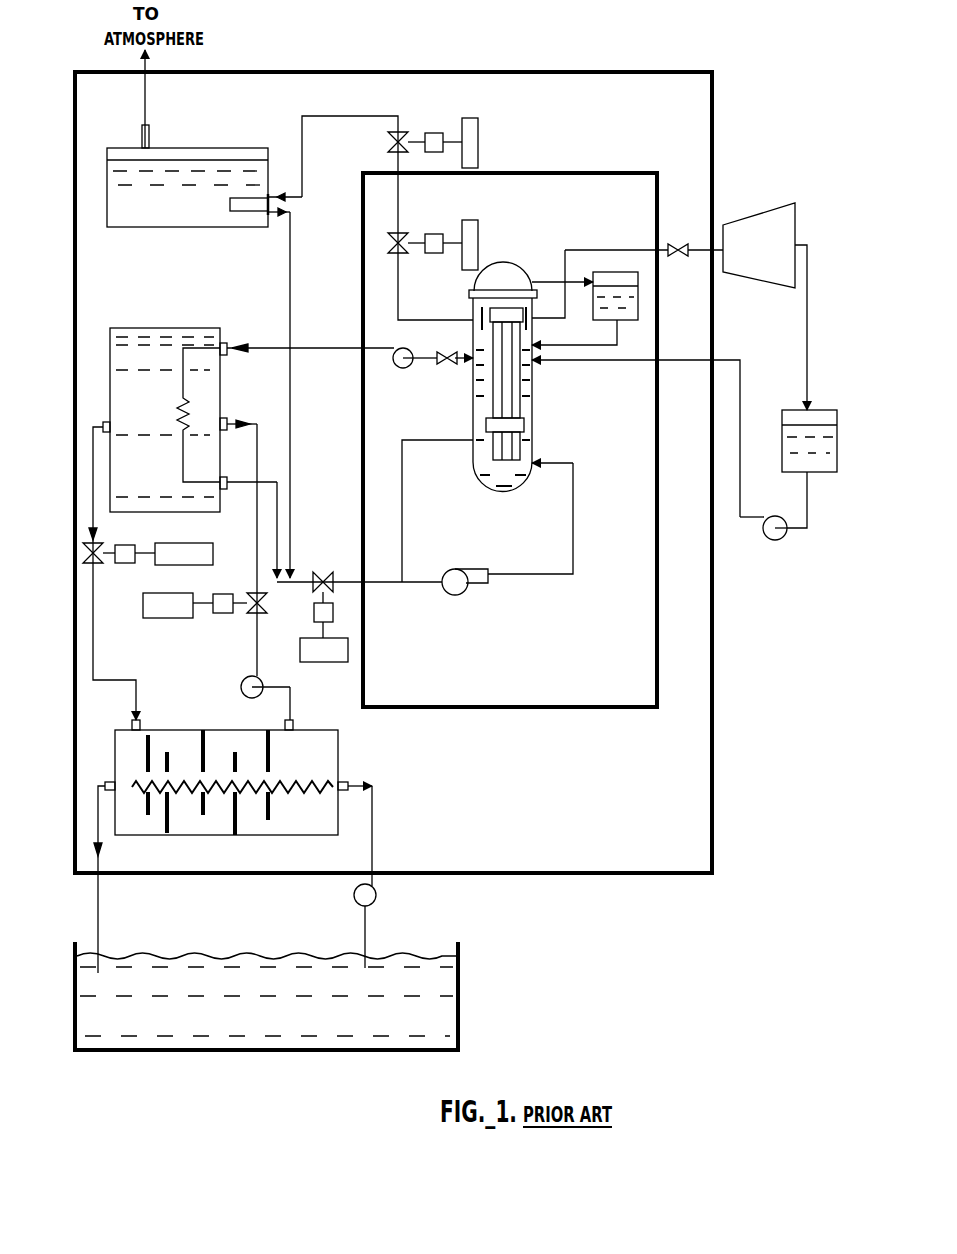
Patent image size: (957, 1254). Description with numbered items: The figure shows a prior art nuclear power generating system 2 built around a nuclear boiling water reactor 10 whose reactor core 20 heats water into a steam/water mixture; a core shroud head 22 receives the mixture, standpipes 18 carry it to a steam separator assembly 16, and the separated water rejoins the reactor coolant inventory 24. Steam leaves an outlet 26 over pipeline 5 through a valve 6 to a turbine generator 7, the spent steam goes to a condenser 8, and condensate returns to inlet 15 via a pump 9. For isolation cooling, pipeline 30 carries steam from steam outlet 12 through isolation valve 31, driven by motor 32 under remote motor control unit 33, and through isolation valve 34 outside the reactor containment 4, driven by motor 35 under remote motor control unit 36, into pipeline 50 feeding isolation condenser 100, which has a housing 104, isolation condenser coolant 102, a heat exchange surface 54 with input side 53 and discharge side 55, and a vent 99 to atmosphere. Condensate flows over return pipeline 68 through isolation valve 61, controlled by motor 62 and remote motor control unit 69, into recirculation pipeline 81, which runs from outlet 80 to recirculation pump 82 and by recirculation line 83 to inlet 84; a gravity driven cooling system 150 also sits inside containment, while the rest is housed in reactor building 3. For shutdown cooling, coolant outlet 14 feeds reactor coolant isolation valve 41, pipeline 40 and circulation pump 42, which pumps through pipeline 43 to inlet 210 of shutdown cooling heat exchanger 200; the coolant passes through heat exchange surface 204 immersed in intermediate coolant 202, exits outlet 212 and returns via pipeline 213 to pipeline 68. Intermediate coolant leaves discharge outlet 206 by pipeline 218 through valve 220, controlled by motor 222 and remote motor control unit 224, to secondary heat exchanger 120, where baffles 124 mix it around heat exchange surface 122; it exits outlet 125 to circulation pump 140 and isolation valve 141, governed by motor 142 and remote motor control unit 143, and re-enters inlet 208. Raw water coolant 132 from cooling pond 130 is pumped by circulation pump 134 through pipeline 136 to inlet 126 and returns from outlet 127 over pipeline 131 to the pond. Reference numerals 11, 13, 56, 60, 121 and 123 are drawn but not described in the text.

The nuclear power generating system 2 is at (628, 928).
The reactor building 3 is at (712, 848).
The reactor containment 4 is at (657, 683).
The pipeline 5 is at (616, 250).
The valve 6 is at (680, 248).
The turbine generator 7 is at (768, 212).
The condenser 8 is at (814, 410).
The pump 9 is at (782, 540).
The nuclear boiling water reactor 10 is at (516, 250).
The reactor vessel head 11 is at (516, 268).
The steam outlet 12 is at (473, 322).
The feedwater line 13 is at (620, 362).
The coolant outlet 14 is at (466, 362).
The inlet 15 is at (540, 352).
The steam separator assembly 16 is at (476, 307).
The standpipes 18 is at (493, 393).
The reactor core 20 is at (520, 446).
The core shroud head 22 is at (524, 425).
The reactor coolant inventory 24 is at (526, 396).
The outlet 26 is at (534, 312).
The pipeline 30 is at (398, 290).
The isolation valve 31 is at (396, 236).
The motor 32 is at (428, 234).
The remote motor control unit 33 is at (478, 226).
The isolation valve 34 is at (396, 138).
The motor 35 is at (426, 134).
The remote motor control unit 36 is at (478, 126).
The pipeline 40 is at (430, 370).
The reactor coolant isolation valve 41 is at (446, 366).
The reactor coolant circulation pump 42 is at (397, 348).
The pipeline 43 is at (366, 346).
The pipeline 50 is at (368, 116).
The input side 53 is at (272, 195).
The heat exchange surface 54 is at (230, 206).
The discharge side 55 is at (282, 228).
The drain line 56 is at (290, 505).
The valve stem line 60 is at (338, 600).
The isolation valve 61 is at (328, 574).
The motor 62 is at (314, 620).
The return pipeline 68 is at (282, 584).
The remote motor control unit 69 is at (300, 650).
The outlet 80 is at (473, 445).
The recirculation pipeline 81 is at (428, 441).
The recirculation pump 82 is at (462, 569).
The recirculation line 83 is at (576, 548).
The inlet 84 is at (542, 463).
The vent or duct system 99 is at (149, 130).
The isolation condenser 100 is at (192, 148).
The isolation condenser coolant 102 is at (256, 222).
The housing or shell 104 is at (107, 227).
The secondary heat exchanger 120 is at (338, 745).
The inlet line 121 is at (138, 700).
The heat exchange surface 122 is at (310, 783).
The inlet nozzle 123 is at (140, 727).
The baffles 124 is at (228, 835).
The outlet 125 is at (293, 726).
The inlet 126 is at (348, 784).
The outlet 127 is at (110, 782).
The cooling pond 130 is at (458, 952).
The pipeline 131 is at (100, 918).
The raw water coolant 132 is at (445, 1008).
The circulation pump 134 is at (376, 895).
The pipeline 136 is at (372, 840).
The circulation pump 140 is at (260, 680).
The isolation valve 141 is at (257, 615).
The motor 142 is at (218, 594).
The remote motor control unit 143 is at (176, 593).
The gravity driven cooling system 150 is at (617, 320).
The shutdown cooling heat exchanger 200 is at (140, 328).
The intermediate coolant 202 is at (182, 334).
The heat exchange surface 204 is at (200, 400).
The discharge outlet 206 is at (102, 422).
The inlet 208 is at (228, 418).
The inlet 210 is at (227, 343).
The outlet 212 is at (224, 477).
The pipeline 213 is at (277, 480).
The pipeline 218 is at (93, 490).
The valve 220 is at (98, 543).
The motor 222 is at (136, 545).
The remote motor control unit 224 is at (213, 545).